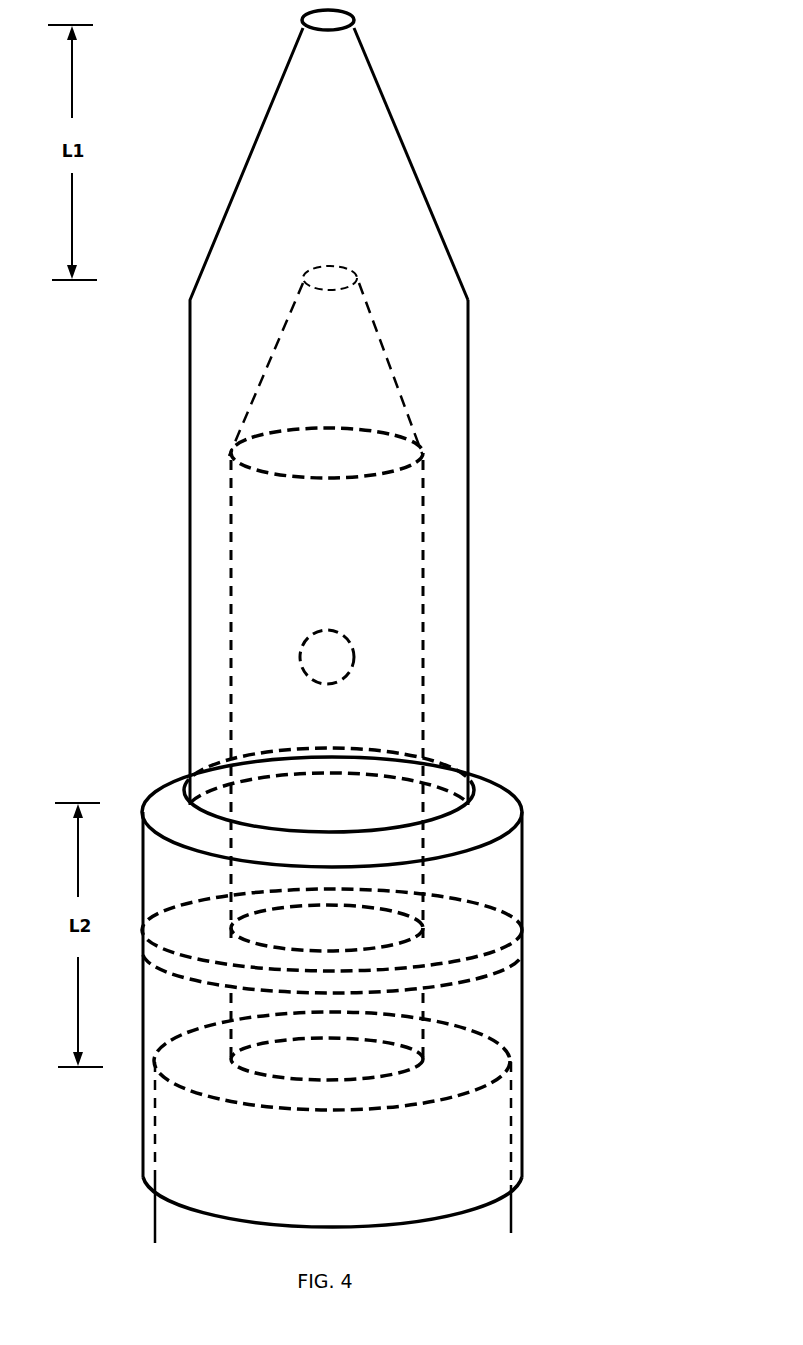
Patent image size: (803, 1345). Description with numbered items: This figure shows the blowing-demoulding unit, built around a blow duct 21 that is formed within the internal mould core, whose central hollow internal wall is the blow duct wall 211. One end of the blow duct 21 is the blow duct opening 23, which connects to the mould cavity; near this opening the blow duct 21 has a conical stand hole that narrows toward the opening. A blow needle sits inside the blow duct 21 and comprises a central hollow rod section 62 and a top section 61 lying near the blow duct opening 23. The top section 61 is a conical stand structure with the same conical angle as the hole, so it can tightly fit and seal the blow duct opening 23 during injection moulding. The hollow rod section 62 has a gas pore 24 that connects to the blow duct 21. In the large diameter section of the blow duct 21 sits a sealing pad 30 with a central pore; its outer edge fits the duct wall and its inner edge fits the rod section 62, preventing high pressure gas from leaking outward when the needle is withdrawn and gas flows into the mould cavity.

The blow duct opening 23 is at (354, 18).
The blow duct 21 is at (433, 380).
The blow duct wall 211 is at (468, 415).
The top section of the blow needle 61 is at (422, 447).
The rod section of the blow needle 62 is at (424, 530).
The gas pore 24 is at (354, 658).
The sealing pad 30 is at (475, 933).